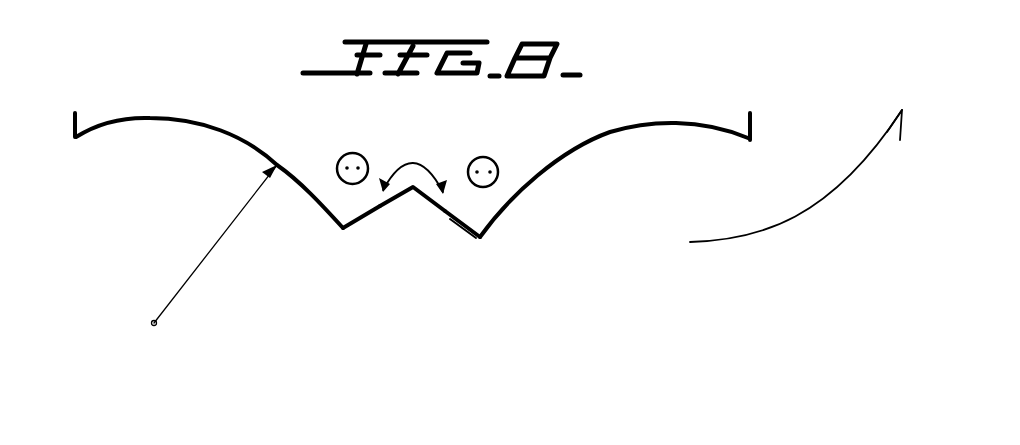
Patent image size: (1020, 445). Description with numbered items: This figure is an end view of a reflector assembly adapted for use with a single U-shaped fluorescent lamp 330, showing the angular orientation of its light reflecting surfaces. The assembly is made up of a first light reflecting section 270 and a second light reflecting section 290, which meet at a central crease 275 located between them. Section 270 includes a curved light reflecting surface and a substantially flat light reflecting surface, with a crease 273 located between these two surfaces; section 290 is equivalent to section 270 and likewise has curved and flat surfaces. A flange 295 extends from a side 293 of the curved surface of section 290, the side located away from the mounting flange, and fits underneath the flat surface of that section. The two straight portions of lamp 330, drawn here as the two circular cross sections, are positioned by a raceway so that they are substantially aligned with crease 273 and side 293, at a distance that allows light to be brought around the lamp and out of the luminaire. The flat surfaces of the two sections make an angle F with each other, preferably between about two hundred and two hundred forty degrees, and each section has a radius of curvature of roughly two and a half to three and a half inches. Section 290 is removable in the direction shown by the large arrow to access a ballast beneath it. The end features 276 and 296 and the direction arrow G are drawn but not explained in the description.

The first light reflecting section 270 is at (203, 127).
The left end tab 276 is at (68, 116).
The crease 273 is at (343, 230).
The crease 275 is at (410, 190).
The side of light reflecting surface 293 is at (480, 240).
The flange 295 is at (455, 230).
The second light reflecting section 290 is at (563, 160).
The right end tab 296 is at (753, 120).
The single U-shaped fluorescent lamp 330 is at (479, 158).
The angle F is at (428, 158).
The direction G is at (198, 267).